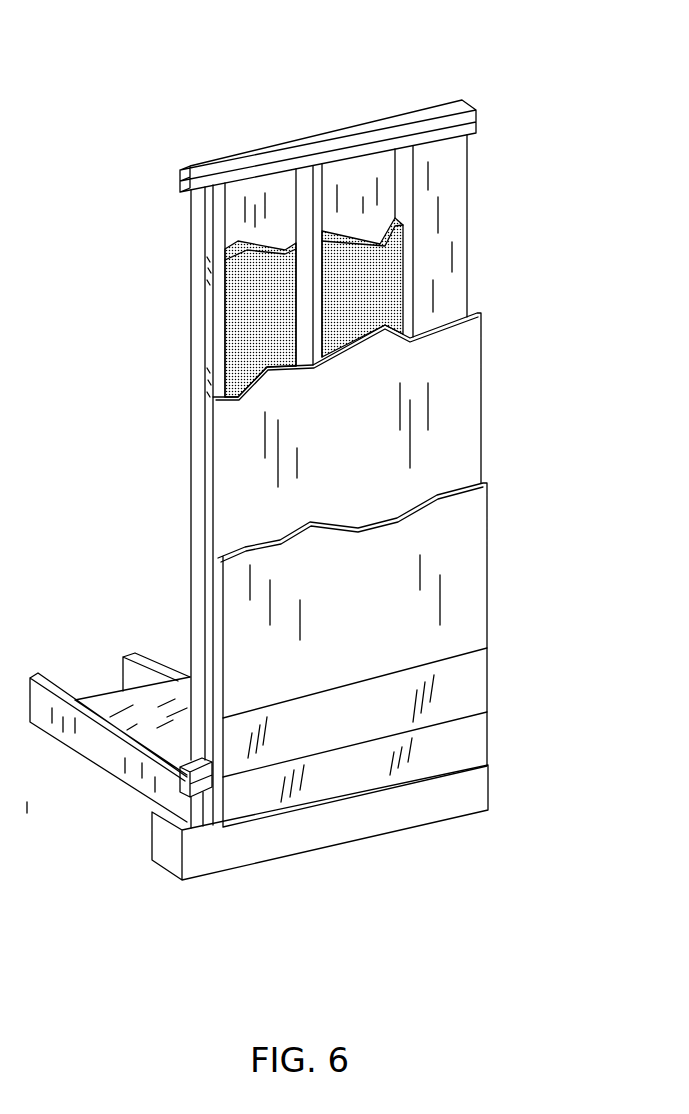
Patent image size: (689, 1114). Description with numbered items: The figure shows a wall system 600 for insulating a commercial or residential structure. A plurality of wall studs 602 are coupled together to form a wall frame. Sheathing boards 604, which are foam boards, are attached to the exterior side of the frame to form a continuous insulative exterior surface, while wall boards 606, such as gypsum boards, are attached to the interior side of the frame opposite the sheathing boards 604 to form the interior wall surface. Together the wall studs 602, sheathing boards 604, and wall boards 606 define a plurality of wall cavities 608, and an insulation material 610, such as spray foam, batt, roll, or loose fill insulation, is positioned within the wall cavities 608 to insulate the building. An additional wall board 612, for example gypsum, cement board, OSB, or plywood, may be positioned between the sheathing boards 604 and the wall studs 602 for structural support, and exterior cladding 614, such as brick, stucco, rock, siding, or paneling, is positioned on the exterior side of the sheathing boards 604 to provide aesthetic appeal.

The wall system 600 is at (122, 112).
The wall stud 602 is at (208, 330).
The sheathing board 604 is at (468, 572).
The wall board 606 is at (460, 242).
The wall cavity 608 is at (354, 185).
The insulation material 610 is at (238, 293).
The additional wall board 612 is at (470, 393).
The exterior cladding 614 is at (468, 687).